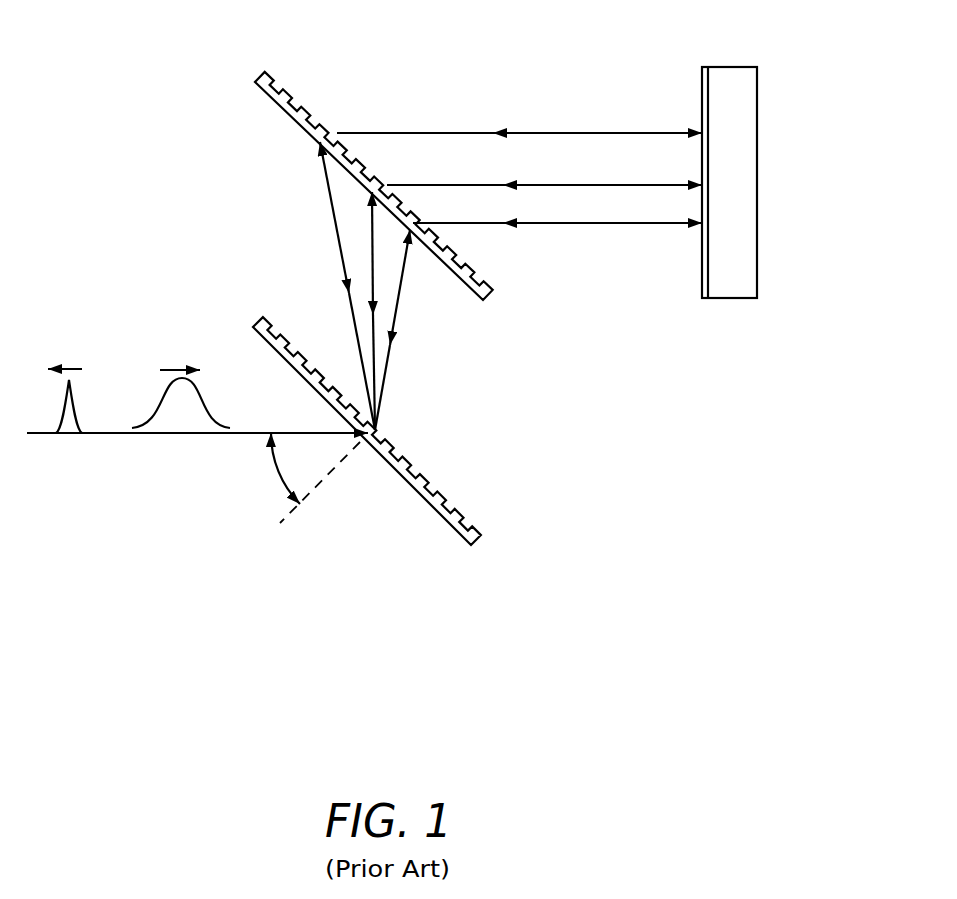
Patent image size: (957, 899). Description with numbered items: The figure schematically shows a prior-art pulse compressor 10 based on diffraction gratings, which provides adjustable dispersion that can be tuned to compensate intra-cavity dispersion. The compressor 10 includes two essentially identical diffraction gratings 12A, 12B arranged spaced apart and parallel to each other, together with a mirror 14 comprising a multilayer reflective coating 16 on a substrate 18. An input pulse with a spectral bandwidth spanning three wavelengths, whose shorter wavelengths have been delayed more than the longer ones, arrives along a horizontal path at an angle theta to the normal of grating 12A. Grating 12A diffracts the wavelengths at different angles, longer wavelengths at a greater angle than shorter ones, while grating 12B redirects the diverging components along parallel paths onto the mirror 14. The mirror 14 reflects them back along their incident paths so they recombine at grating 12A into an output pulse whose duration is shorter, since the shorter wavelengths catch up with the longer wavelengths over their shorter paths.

The compressor 10 is at (575, 635).
The diffraction grating 12A is at (412, 492).
The diffraction grating 12B is at (285, 118).
The mirror 14 is at (695, 221).
The multilayer reflective coating 16 is at (702, 90).
The substrate 18 is at (745, 288).